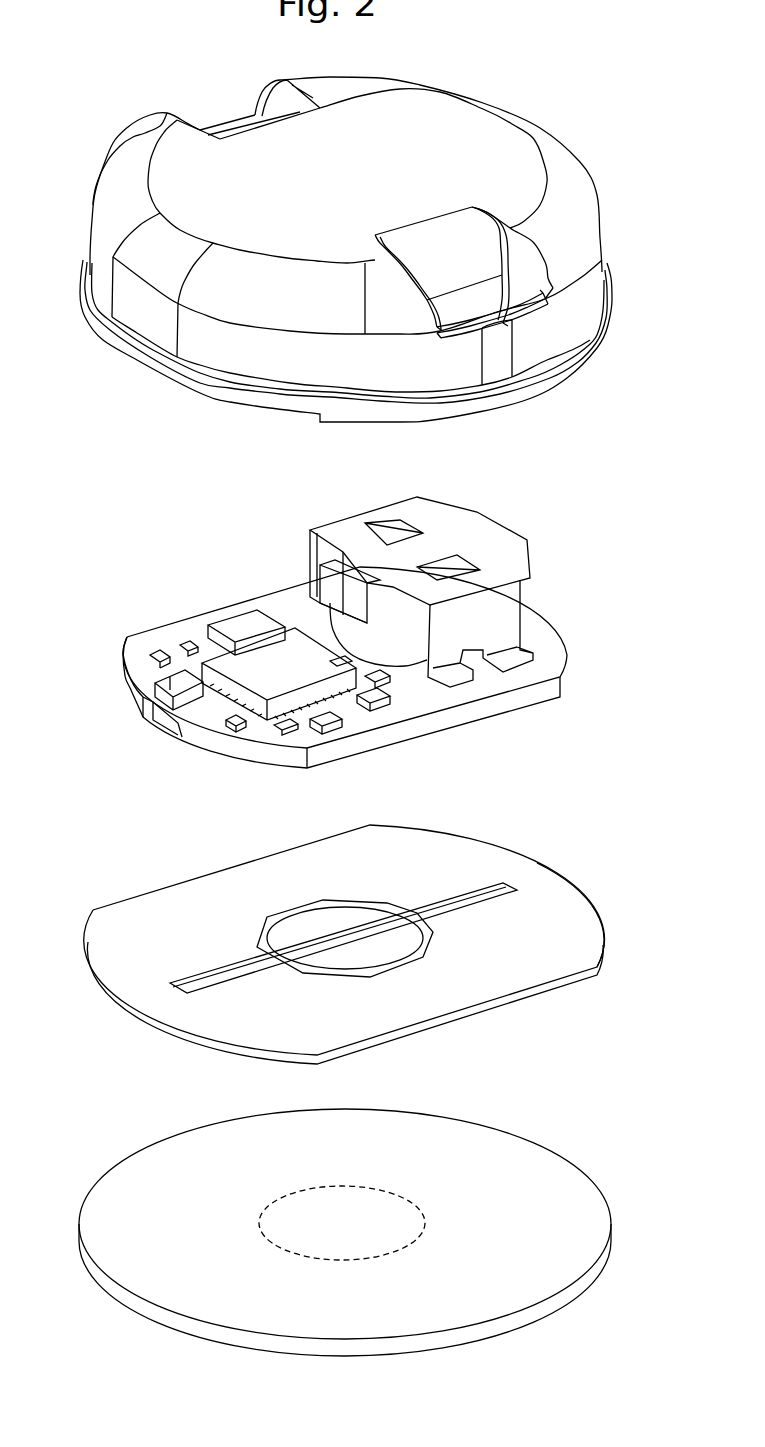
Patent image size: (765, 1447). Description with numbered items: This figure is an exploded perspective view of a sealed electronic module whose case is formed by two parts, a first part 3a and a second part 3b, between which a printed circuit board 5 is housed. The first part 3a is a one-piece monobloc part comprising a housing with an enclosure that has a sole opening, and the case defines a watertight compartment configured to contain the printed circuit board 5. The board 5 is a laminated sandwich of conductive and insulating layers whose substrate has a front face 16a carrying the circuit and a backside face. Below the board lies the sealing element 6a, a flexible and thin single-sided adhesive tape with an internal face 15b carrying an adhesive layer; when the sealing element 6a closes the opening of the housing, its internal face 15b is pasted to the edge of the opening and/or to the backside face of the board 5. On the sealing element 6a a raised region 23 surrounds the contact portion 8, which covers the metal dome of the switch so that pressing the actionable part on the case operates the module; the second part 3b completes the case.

The first part 3a is at (597, 197).
The printed circuit board 5 is at (565, 634).
The front face 16a is at (152, 633).
The sealing element 6a is at (473, 838).
The internal face 15b is at (568, 920).
The pressure sensing portion 23 is at (307, 923).
The second part 3b is at (555, 1193).
The contact portion 8 is at (285, 1198).